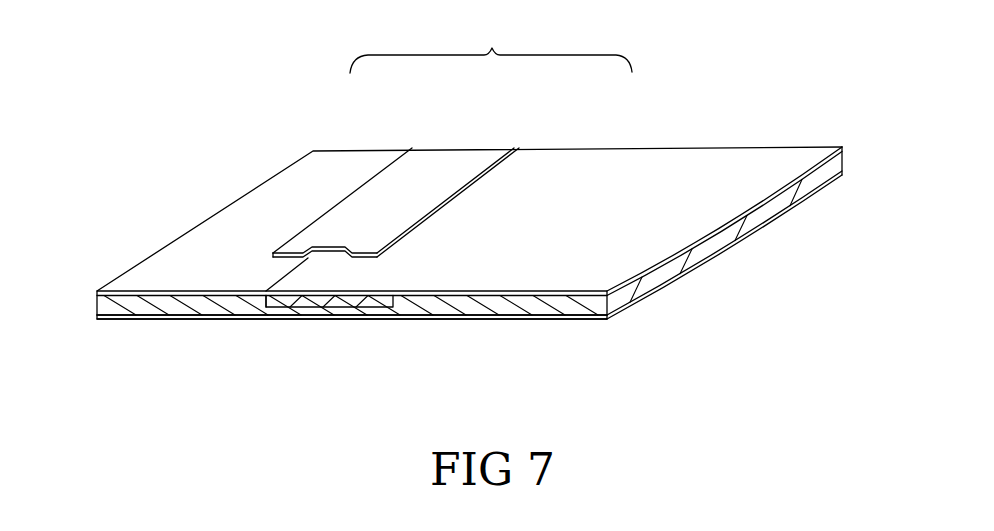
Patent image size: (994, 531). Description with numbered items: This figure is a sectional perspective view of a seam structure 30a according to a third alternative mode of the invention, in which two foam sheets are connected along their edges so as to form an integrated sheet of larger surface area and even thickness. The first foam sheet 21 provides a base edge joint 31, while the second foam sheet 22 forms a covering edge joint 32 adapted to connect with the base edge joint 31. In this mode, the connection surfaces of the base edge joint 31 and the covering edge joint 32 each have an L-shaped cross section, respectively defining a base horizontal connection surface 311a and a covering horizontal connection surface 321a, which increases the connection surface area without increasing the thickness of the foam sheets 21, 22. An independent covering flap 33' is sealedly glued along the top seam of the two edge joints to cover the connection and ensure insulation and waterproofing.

The seam structure 30a is at (491, 45).
The covering flap 33' is at (469, 194).
The covering edge joint 32 is at (411, 259).
The covering horizontal connection surface 321a is at (382, 304).
The second foam sheet 22 is at (684, 284).
The first foam sheet 21 is at (154, 319).
The base horizontal connection surface 311a is at (300, 307).
The base edge joint 31 is at (395, 324).